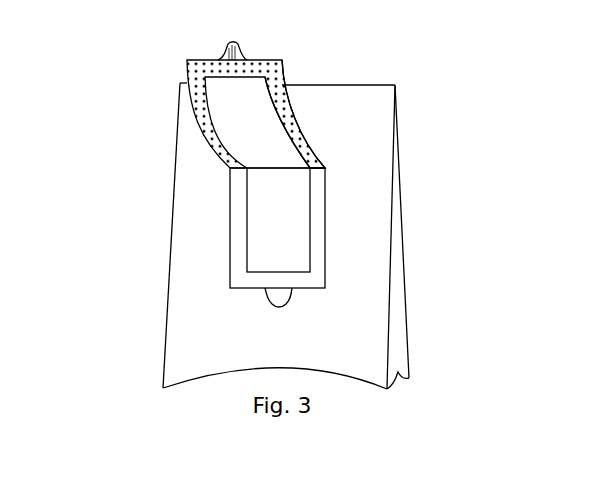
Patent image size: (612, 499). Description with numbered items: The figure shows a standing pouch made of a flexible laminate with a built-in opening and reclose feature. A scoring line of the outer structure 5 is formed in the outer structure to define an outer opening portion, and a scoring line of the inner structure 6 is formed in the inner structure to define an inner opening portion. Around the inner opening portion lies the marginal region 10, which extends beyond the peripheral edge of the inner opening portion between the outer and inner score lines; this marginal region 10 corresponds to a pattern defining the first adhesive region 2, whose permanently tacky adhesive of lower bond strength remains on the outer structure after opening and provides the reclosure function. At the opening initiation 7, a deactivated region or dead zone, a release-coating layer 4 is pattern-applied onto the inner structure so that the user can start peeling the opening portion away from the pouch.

The first adhesive region 2 is at (195, 102).
The release-coating layer 4 is at (235, 50).
The scoring line of the outer structure 5 is at (313, 152).
The scoring line of the inner structure 6 is at (282, 118).
The opening initiation 7 is at (277, 295).
The marginal region 10 is at (317, 231).